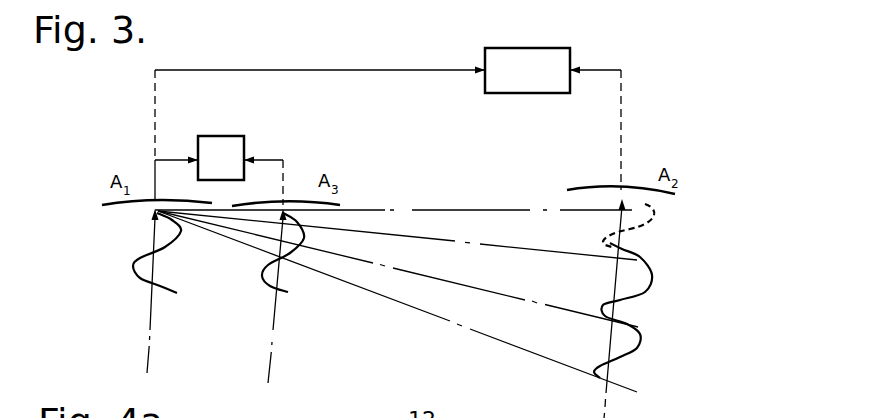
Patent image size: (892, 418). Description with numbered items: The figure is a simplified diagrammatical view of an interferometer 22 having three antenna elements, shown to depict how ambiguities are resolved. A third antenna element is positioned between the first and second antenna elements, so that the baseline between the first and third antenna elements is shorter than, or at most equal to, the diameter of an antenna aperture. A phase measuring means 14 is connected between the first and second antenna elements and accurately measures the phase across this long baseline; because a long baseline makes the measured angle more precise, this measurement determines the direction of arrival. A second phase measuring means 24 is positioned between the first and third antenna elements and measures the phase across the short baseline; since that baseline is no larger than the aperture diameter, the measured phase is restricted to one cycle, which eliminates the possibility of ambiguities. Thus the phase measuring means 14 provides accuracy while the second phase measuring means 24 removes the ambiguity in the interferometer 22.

The phase measuring means 14 is at (571, 47).
The second phase measuring means 24 is at (244, 136).
The interferometer 22 is at (688, 51).